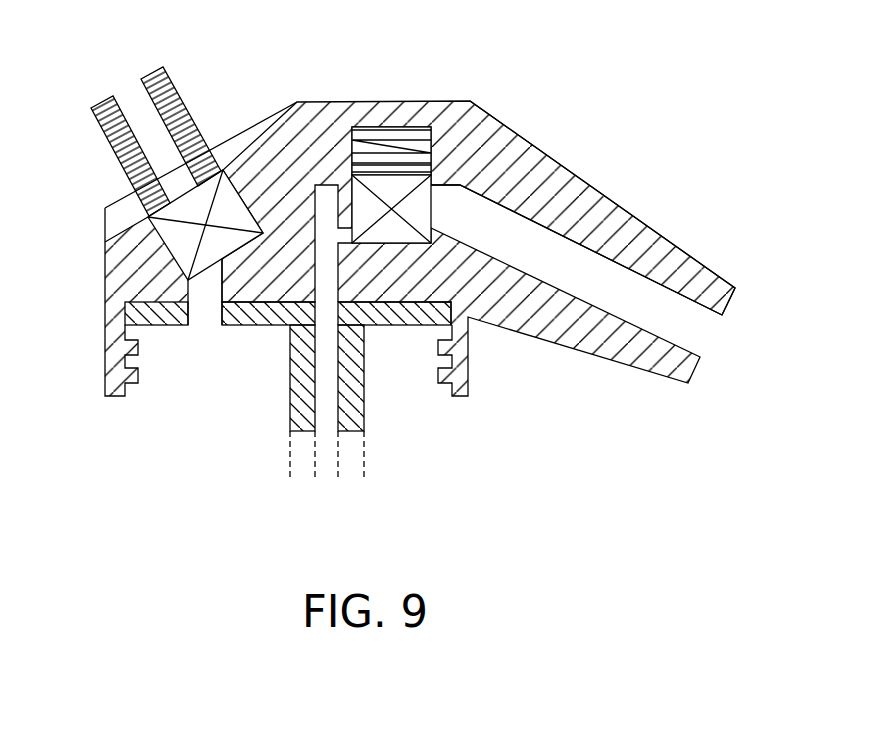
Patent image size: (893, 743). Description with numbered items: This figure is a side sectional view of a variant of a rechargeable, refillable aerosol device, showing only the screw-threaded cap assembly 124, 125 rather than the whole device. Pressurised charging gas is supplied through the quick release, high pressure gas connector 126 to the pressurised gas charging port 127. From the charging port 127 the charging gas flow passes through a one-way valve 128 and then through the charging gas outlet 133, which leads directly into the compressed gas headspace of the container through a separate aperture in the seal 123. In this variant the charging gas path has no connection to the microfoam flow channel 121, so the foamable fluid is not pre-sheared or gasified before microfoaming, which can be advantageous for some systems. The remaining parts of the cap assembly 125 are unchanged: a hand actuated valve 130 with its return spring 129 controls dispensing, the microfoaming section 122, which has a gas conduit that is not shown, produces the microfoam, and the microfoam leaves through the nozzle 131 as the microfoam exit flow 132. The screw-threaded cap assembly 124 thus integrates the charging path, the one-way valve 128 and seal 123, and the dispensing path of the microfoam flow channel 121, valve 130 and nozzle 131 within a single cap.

The microfoam flow channel 121 is at (330, 455).
The microfoaming section 122 is at (302, 410).
The seal 123 is at (398, 324).
The screw-threaded cap assembly 124 is at (468, 372).
The cap assembly 125 is at (105, 268).
The quick release, high pressure gas connector 126 is at (105, 138).
The pressurised gas charging port 127 is at (119, 75).
The one-way valve 128 is at (232, 205).
The return spring 129 is at (386, 131).
The hand actuated valve 130 is at (418, 197).
The nozzle 131 is at (597, 200).
The microfoam exit flow 132 is at (716, 339).
The charging gas outlet 133 is at (206, 313).